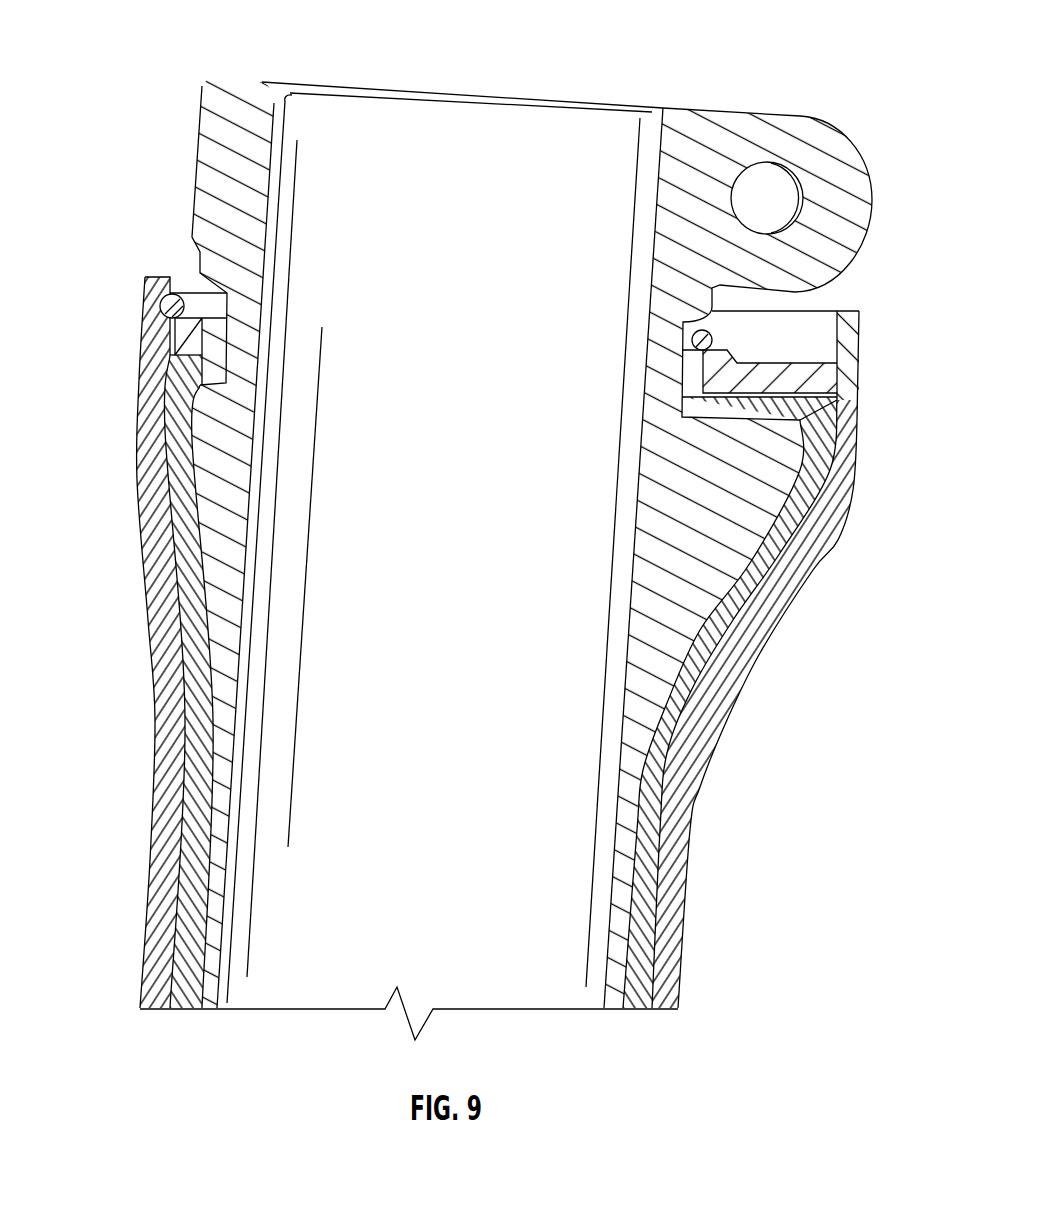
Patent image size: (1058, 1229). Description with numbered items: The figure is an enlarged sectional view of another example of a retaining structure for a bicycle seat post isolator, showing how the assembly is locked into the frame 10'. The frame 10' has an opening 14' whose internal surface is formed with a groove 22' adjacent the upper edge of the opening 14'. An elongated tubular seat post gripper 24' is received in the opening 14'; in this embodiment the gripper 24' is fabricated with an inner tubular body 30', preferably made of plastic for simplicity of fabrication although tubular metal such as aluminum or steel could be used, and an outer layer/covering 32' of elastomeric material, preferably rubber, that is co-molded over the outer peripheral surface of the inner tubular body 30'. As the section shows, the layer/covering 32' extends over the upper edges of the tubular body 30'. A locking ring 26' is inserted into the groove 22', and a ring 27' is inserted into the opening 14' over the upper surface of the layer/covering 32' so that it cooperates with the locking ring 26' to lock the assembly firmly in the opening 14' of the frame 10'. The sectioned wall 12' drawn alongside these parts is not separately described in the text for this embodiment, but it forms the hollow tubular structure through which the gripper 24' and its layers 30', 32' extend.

The frame 10' is at (535, 555).
The container body wall 12' is at (466, 545).
The opening 14' is at (157, 232).
The groove 22' is at (128, 354).
The elongated tubular seat post gripper 24' is at (783, 704).
The locking ring 26' is at (107, 312).
The ring 27' is at (779, 659).
The inner tubular body 30' is at (133, 681).
The outer layer/covering 32' is at (123, 642).